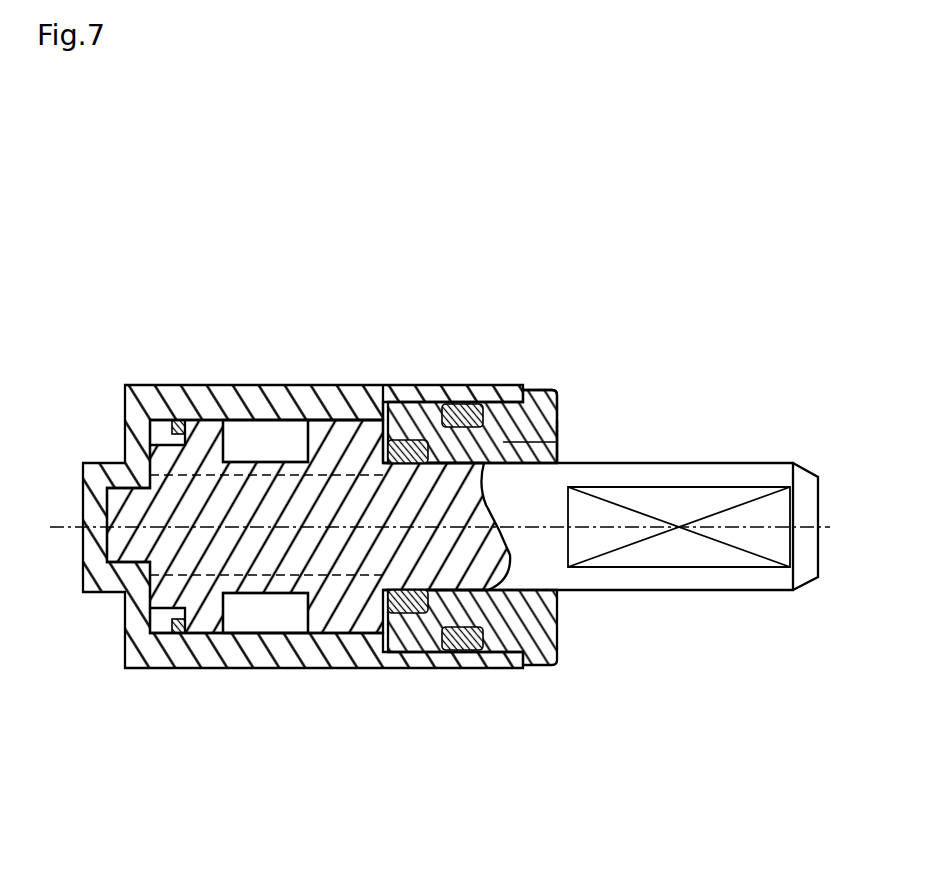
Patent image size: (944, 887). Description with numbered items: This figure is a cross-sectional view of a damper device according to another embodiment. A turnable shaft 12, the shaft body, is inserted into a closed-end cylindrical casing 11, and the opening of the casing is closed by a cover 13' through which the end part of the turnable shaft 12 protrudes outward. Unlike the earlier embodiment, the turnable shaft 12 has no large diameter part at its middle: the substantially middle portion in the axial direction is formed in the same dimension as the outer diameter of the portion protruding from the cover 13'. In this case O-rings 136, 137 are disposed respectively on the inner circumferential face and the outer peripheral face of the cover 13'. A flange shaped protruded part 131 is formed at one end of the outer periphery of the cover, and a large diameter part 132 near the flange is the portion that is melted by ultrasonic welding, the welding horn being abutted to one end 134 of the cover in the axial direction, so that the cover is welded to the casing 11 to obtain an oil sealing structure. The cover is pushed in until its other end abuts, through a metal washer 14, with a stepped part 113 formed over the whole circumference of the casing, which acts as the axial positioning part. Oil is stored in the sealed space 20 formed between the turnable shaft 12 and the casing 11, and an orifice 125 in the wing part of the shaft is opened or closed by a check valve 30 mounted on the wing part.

The casing 11 is at (137, 437).
The turnable shaft 12 is at (770, 473).
The cover 13' is at (625, 413).
The metal washer 14 is at (362, 430).
The sealed space 20 is at (262, 622).
The check valve 30 is at (133, 420).
The stepped part 113 is at (382, 387).
The orifice 125 is at (270, 452).
The flange shaped protruded part 131 is at (553, 402).
The large diameter part 132 is at (535, 398).
The one end of the cover 134 is at (555, 422).
The O-ring 136 is at (428, 408).
The O-ring 137 is at (483, 402).